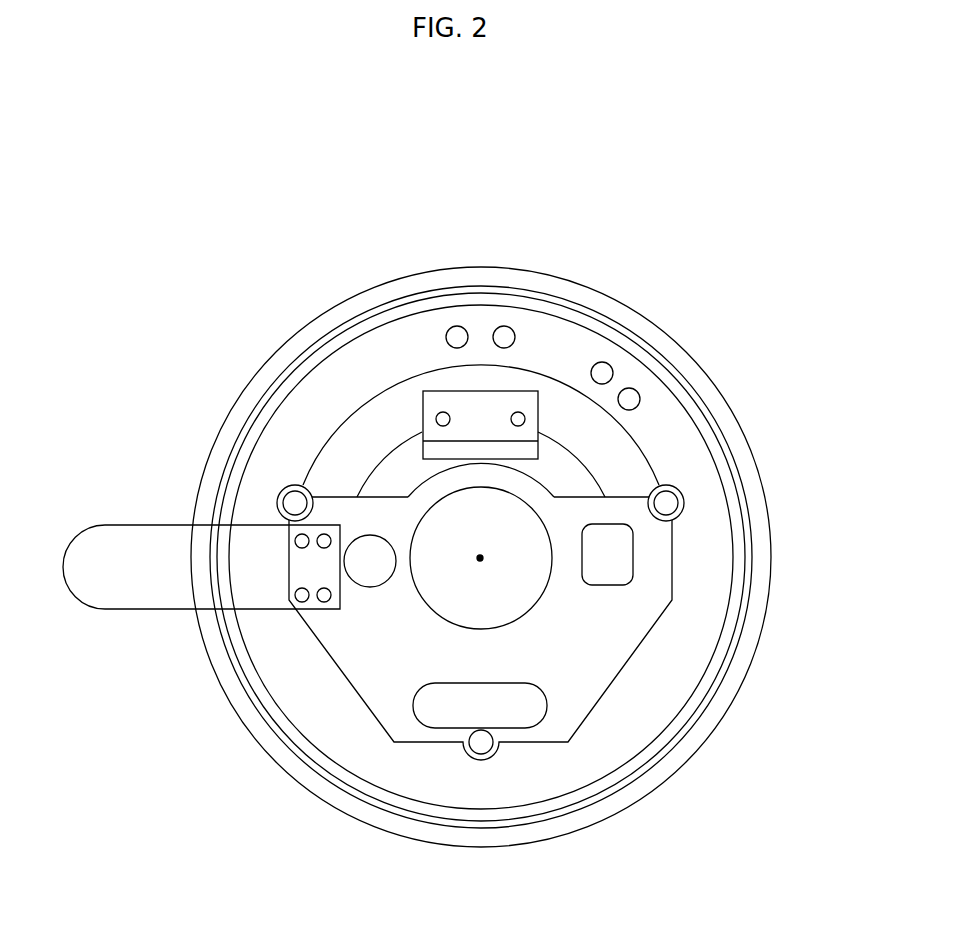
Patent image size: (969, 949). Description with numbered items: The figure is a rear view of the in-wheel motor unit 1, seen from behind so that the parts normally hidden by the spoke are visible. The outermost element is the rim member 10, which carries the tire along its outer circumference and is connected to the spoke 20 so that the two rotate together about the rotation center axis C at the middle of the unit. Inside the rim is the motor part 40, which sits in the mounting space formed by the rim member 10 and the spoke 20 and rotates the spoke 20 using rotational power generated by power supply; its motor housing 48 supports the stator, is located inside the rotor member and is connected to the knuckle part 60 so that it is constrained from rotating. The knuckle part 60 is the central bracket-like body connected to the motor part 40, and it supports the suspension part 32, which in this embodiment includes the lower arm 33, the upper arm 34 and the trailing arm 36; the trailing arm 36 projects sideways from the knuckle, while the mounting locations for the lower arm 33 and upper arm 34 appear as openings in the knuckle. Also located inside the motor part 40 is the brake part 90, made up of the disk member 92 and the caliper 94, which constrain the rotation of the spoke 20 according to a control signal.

The in-wheel motor unit 1 is at (561, 183).
The rim member 10 is at (710, 377).
The spoke 20 is at (560, 410).
The suspension part 32 is at (106, 638).
The lower arm 33 is at (457, 708).
The upper arm 34 is at (633, 555).
The trailing arm 36 is at (142, 545).
The motor part 40 is at (541, 813).
The motor housing 48 is at (640, 730).
The knuckle part 60 is at (377, 680).
The brake part 90 is at (336, 194).
The disk member 92 is at (397, 477).
The caliper 94 is at (480, 409).
The rotation center axis C is at (480, 558).